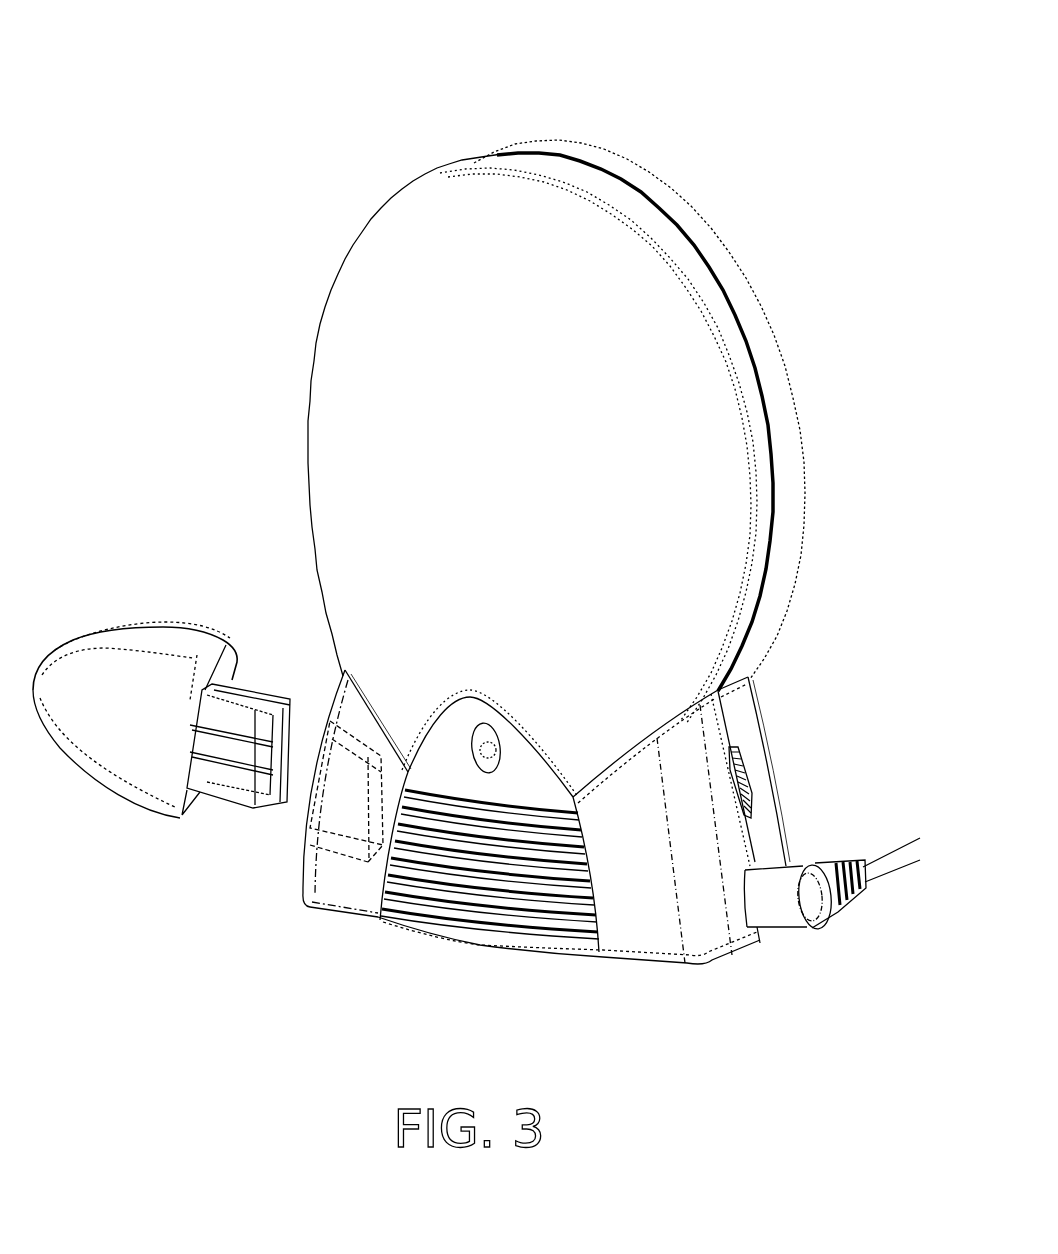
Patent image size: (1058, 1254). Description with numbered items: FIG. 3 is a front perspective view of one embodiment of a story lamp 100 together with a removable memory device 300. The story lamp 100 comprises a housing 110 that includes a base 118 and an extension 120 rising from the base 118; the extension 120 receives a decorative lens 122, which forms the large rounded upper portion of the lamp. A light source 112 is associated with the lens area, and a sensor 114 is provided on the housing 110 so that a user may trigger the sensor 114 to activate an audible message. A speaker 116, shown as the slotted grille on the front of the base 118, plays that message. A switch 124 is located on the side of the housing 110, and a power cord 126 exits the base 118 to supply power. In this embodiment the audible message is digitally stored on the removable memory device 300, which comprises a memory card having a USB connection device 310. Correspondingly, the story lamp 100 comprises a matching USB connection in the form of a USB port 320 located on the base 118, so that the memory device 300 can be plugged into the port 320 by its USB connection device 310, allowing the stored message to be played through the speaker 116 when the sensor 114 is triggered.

The story lamp 100 is at (238, 63).
The housing 110 is at (819, 306).
The light source 112 is at (497, 490).
The sensor 114 is at (493, 751).
The speaker 116 is at (575, 860).
The base 118 is at (767, 810).
The extension 120 is at (598, 155).
The decorative lens 122 is at (338, 332).
The switch 124 is at (753, 770).
The power cord 126 is at (883, 860).
The removable memory device 300 is at (147, 728).
The USB connection device 310 is at (240, 773).
The USB port 320 is at (317, 710).